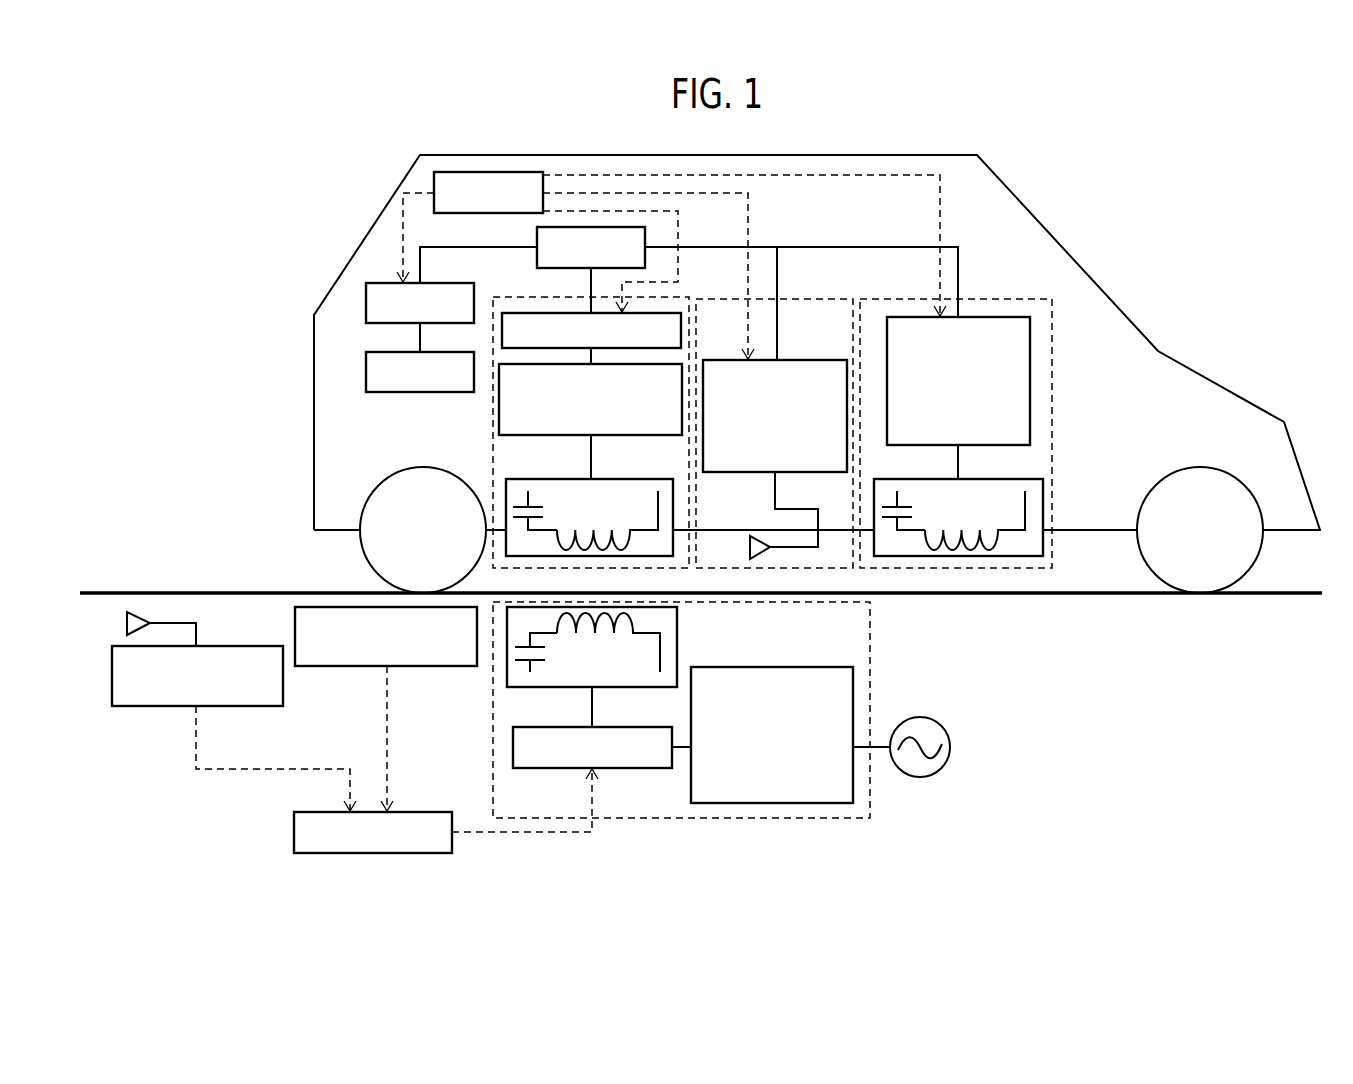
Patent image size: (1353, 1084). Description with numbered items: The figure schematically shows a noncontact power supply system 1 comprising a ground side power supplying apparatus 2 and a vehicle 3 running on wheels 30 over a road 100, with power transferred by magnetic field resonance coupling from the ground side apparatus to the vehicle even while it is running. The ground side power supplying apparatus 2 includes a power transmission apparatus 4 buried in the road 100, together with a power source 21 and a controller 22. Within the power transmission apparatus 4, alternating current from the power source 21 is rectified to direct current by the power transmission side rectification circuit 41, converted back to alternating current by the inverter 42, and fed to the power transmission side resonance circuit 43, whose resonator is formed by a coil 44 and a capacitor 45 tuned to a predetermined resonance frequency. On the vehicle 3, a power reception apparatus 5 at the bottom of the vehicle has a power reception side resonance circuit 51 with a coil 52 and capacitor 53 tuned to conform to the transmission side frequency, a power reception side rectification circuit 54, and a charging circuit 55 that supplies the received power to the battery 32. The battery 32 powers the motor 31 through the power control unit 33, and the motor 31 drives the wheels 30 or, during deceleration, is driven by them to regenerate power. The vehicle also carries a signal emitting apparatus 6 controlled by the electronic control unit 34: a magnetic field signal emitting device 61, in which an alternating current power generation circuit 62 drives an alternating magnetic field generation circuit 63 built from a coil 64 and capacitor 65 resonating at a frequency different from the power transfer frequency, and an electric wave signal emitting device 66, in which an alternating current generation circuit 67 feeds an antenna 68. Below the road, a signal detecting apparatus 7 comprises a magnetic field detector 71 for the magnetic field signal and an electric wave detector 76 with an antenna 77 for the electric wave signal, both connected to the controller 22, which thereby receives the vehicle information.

The noncontact power supply system 1 is at (1212, 203).
The ground side power supplying apparatus 2 is at (700, 832).
The vehicle 3 is at (1028, 213).
The power transmission apparatus 4 is at (870, 652).
The power reception apparatus 5 is at (684, 297).
The signal emitting apparatus 6 is at (965, 172).
The signal detecting apparatus 7 is at (227, 868).
The power source 21 is at (940, 770).
The controller 22 is at (363, 853).
The wheels 30 is at (363, 497).
The motor 31 is at (366, 372).
The battery 32 is at (537, 242).
The power control unit (PCU) 33 is at (366, 301).
The electronic control unit (ECU) 34 is at (434, 177).
The power transmission side rectification circuit 41 is at (779, 667).
The inverter 42 is at (513, 741).
The power transmission side resonance circuit 43 is at (507, 687).
The coil 44 is at (615, 648).
The capacitor 45 is at (532, 662).
The power reception side resonance circuit 51 is at (506, 479).
The coil 52 is at (617, 510).
The capacitor 53 is at (537, 505).
The power reception side rectification circuit 54 is at (499, 412).
The charging circuit 55 is at (540, 313).
The magnetic field signal emitting device 61 is at (994, 299).
The alternating current power generation circuit 62 is at (1030, 418).
The alternating magnetic field generation circuit 63 is at (1043, 494).
The coil 64 is at (985, 512).
The capacitor 65 is at (905, 503).
The electric wave signal emitting device 66 is at (814, 299).
The alternating current generation circuit 67 is at (812, 360).
The antenna 68 is at (761, 531).
The magnetic field detector 71 is at (353, 667).
The electric wave detector 76 is at (235, 707).
The antenna 77 is at (135, 608).
The road 100 is at (242, 592).